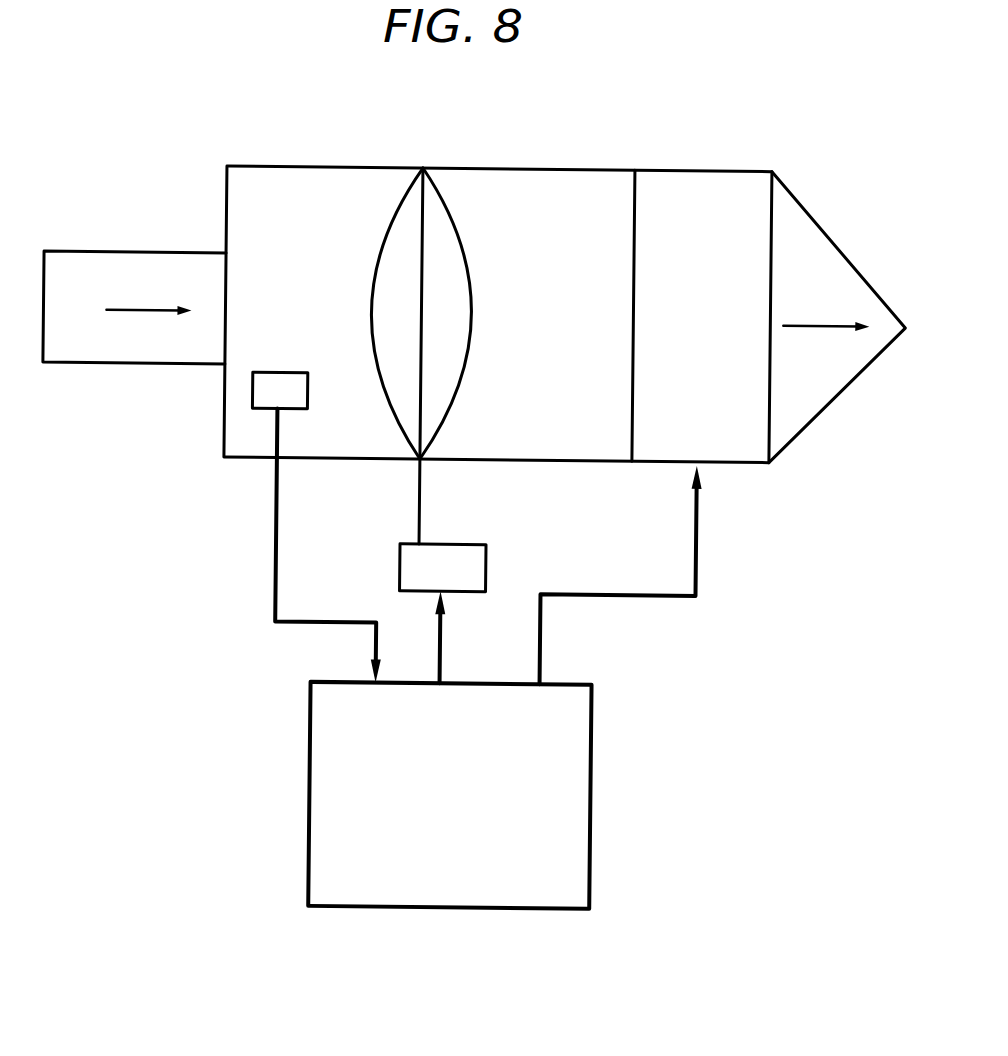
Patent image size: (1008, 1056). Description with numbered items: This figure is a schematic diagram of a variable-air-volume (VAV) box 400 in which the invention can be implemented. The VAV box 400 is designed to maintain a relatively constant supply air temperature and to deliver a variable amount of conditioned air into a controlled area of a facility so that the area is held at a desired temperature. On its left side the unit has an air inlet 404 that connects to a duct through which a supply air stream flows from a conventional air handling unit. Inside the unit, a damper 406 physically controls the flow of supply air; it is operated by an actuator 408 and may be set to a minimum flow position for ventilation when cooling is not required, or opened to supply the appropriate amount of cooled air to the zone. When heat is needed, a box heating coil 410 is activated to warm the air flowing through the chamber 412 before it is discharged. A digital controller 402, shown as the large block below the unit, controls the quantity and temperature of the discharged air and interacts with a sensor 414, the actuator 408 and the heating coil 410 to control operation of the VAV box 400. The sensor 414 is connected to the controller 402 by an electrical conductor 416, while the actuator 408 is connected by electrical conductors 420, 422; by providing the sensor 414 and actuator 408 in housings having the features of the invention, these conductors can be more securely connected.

The variable-air-volume (VAV) box 400 is at (176, 196).
The digital controller 402 is at (594, 810).
The air inlet 404 is at (124, 386).
The damper 406 is at (467, 182).
The actuator 408 is at (487, 564).
The box heating coil 410 is at (722, 180).
The chamber 412 is at (560, 170).
The sensor 414 is at (252, 388).
The electrical conductor 416 is at (276, 600).
The electrical conductor 420 is at (420, 505).
The electrical conductor 422 is at (442, 651).